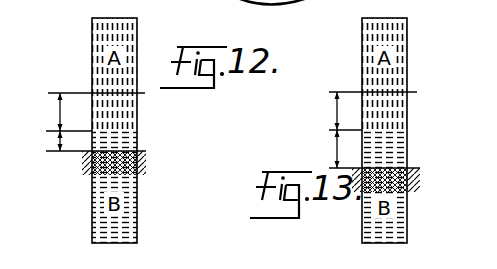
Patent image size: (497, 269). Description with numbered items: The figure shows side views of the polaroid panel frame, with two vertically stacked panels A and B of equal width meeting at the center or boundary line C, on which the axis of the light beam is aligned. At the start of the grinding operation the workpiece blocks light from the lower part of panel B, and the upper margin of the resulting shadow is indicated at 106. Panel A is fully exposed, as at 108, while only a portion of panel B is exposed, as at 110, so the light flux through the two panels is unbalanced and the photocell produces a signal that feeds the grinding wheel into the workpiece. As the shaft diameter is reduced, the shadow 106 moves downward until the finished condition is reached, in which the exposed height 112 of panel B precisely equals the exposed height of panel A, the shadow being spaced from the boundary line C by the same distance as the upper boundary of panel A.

In FIG. 12, the upper margin of the shadow 106 is at (146, 151).
In FIG. 13, the upper margin of the shadow 106 is at (407, 168).
In FIG. 12, the fully exposed A panel 108 is at (60, 113).
In FIG. 13, the fully exposed A panel 108 is at (337, 113).
In FIG. 12, the exposed portion of panel B 110 is at (60, 140).
In FIG. 13, the exposed height of panel B 112 is at (337, 150).
In FIG. 12, the center or boundary line C is at (118, 130).
In FIG. 13, the center or boundary line C is at (400, 130).